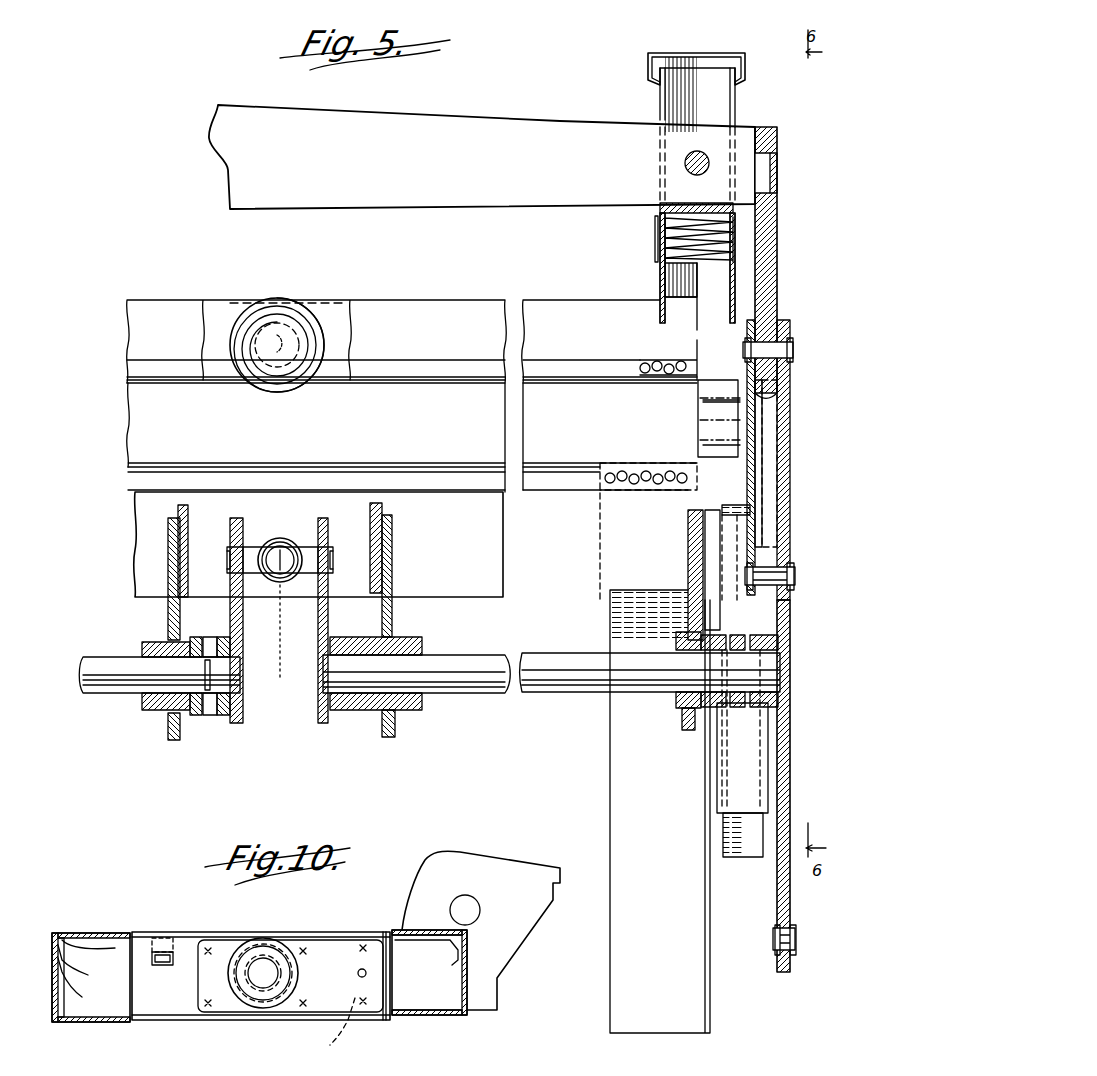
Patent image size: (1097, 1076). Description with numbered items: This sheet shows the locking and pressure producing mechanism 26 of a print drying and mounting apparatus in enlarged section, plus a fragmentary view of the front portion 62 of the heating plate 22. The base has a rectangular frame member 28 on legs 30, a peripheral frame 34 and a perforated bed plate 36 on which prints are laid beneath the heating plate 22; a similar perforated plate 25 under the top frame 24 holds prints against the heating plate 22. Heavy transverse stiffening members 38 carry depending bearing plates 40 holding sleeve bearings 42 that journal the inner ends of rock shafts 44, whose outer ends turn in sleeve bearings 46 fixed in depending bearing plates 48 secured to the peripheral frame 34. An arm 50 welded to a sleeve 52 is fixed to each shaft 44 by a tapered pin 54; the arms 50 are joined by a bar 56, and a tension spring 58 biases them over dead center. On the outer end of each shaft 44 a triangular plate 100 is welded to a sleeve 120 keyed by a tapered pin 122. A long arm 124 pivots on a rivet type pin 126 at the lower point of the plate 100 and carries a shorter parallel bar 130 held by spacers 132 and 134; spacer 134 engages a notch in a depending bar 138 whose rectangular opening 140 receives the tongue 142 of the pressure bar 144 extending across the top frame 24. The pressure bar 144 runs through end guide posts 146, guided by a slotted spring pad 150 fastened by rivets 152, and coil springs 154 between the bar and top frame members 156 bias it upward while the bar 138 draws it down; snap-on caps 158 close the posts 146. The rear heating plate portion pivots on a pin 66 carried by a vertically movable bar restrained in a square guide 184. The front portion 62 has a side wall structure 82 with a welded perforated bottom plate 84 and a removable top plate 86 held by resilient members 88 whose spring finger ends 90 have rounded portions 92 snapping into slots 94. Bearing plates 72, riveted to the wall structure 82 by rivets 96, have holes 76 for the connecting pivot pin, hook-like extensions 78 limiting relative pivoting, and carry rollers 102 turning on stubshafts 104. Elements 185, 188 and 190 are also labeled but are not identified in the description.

In FIG. 5, the heating plate 22 is at (124, 442).
In FIG. 5, the top or pressure frame 24 is at (479, 297).
In FIG. 5, the perforated steel plate 25 is at (455, 377).
In FIG. 5, the locking and pressure producing mechanism 26 is at (790, 112).
In FIG. 5, the rectangular frame member 28 is at (132, 545).
In FIG. 5, the legs 30 is at (625, 805).
In FIG. 5, the peripheral frame 34 is at (688, 562).
In FIG. 5, the bed plate 36 is at (535, 482).
In FIG. 5, the transverse stiffening members 38 is at (187, 528).
In FIG. 5, the depending bearing plates 40 is at (168, 610).
In FIG. 5, the sleeve bearings 42 is at (160, 708).
In FIG. 5, the rock shafts 44 is at (112, 660).
In FIG. 5, the sleeve bearing 46 is at (680, 705).
In FIG. 5, the depending bearing plate 48 is at (690, 605).
In FIG. 5, the arm 50 is at (328, 612).
In FIG. 5, the sleeve 52 is at (220, 715).
In FIG. 5, the tapered pin or key 54 is at (190, 718).
In FIG. 5, the rod or bar 56 is at (252, 548).
In FIG. 5, the tensioned biasing spring 58 is at (282, 590).
In FIG. 5, the front portion 62 is at (178, 428).
In FIG. 10, the front portion 62 is at (175, 933).
In FIG. 5, the pivot pin 66 is at (752, 850).
In FIG. 10, the bearing plates 72 is at (430, 878).
In FIG. 10, the openings or holes 76 is at (463, 900).
In FIG. 10, the hook-like extensions 78 is at (560, 883).
In FIG. 10, the side wall structure 82 is at (52, 1005).
In FIG. 5, the flat perforated bottom plate 84 is at (432, 467).
In FIG. 10, the flat perforated bottom plate 84 is at (110, 1022).
In FIG. 5, the top perforated plate 86 is at (392, 383).
In FIG. 10, the top perforated plate 86 is at (107, 934).
In FIG. 10, the resilient members 88 is at (89, 947).
In FIG. 10, the spring finger end 90 is at (80, 981).
In FIG. 10, the rounded outwardly-projecting portion 92 is at (86, 962).
In FIG. 10, the short slot or opening 94 is at (48, 930).
In FIG. 10, the rivets 96 is at (338, 1045).
In FIG. 5, the triangularly shaped plates 100 is at (776, 911).
In FIG. 10, the rollers 102 is at (265, 946).
In FIG. 10, the stubshaft 104 is at (262, 978).
In FIG. 5, the sleeve 120 is at (738, 710).
In FIG. 5, the tapered pin or key 122 is at (780, 675).
In FIG. 5, the long bar or arm 124 is at (788, 778).
In FIG. 5, the rivet type pivot pin 126 is at (773, 948).
In FIG. 5, the parallel arm or bar 130 is at (760, 512).
In FIG. 5, the spacer 132 is at (775, 590).
In FIG. 5, the spacer 134 is at (767, 326).
In FIG. 5, the depending bar or arm 138 is at (766, 282).
In FIG. 5, the rectangular opening 140 is at (769, 166).
In FIG. 5, the projecting tongue 142 is at (770, 188).
In FIG. 5, the pressure bar 144 is at (360, 151).
In FIG. 5, the end guide posts 146 is at (652, 231).
In FIG. 5, the slotted cylindrical spring pad 150 is at (672, 206).
In FIG. 5, the rivets 152 is at (685, 163).
In FIG. 5, the coil springs 154 is at (665, 237).
In FIG. 5, the top frame members 156 is at (697, 275).
In FIG. 5, the caps 158 is at (610, 72).
In FIG. 5, the square guides 184 is at (740, 787).
In FIG. 5, the bar 185 is at (705, 540).
In FIG. 5, the line 188 is at (330, 290).
In FIG. 5, the spiral spring 190 is at (282, 288).